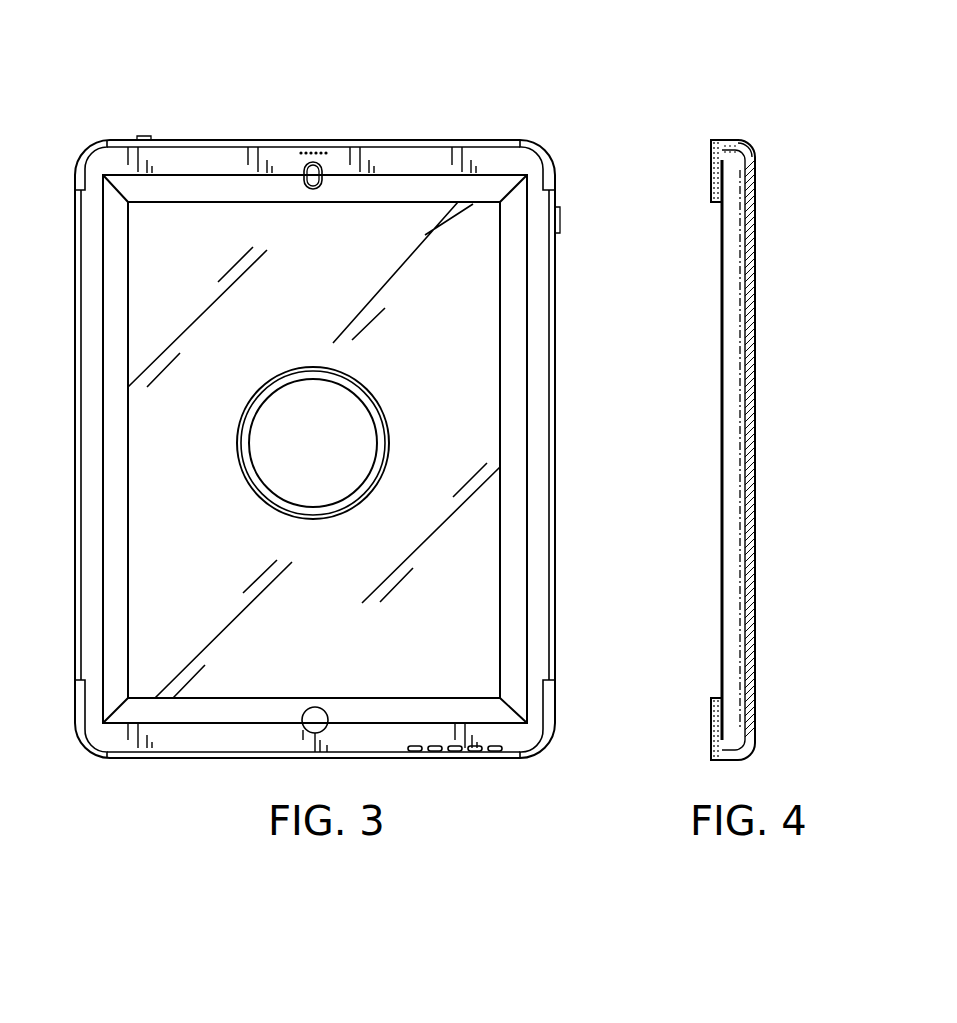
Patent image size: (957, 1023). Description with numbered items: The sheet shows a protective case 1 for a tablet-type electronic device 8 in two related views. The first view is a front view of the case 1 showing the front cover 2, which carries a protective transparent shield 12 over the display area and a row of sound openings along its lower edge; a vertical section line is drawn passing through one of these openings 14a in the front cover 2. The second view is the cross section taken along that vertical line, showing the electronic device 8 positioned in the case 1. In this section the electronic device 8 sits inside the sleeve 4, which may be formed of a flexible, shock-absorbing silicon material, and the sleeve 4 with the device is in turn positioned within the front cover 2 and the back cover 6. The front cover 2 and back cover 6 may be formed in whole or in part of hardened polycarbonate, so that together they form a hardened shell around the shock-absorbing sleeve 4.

In FIG. 3, the case 1 is at (545, 117).
In FIG. 3, the front cover 2 is at (280, 138).
In FIG. 4, the front cover 2 is at (711, 156).
In FIG. 3, the sleeve 4 is at (454, 140).
In FIG. 4, the sleeve 4 is at (757, 207).
In FIG. 4, the back cover 6 is at (752, 163).
In FIG. 4, the electronic device 8 is at (733, 332).
In FIG. 4, the protective transparent shield 12 is at (721, 334).
In FIG. 3, the opening 14a is at (455, 745).